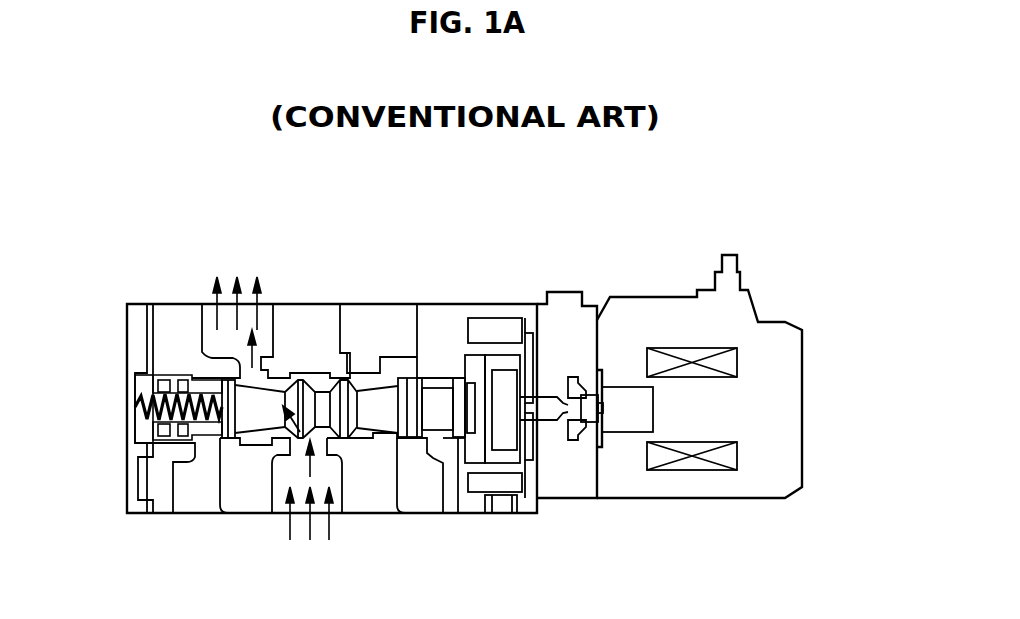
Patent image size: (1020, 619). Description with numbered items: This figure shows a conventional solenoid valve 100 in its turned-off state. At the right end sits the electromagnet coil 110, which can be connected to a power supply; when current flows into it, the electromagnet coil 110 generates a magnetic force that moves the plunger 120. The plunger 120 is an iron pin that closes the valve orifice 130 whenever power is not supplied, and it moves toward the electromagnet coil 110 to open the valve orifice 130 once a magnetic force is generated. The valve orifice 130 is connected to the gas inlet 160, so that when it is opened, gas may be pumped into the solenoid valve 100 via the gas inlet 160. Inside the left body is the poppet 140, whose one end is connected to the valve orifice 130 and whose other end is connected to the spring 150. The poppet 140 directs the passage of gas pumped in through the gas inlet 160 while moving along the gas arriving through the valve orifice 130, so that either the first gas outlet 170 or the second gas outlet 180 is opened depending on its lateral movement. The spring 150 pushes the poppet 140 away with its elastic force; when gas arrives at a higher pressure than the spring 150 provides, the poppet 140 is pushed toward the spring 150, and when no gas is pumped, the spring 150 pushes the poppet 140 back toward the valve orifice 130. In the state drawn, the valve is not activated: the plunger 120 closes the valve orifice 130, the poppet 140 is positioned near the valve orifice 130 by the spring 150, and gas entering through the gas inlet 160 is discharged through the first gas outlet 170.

The solenoid valve 100 is at (560, 256).
The electromagnet coil 110 is at (737, 362).
The plunger 120 is at (593, 440).
The valve orifice 130 is at (573, 420).
The poppet 140 is at (435, 418).
The spring 150 is at (135, 394).
The gas inlet 160 is at (282, 500).
The first gas outlet 170 is at (267, 317).
The second gas outlet 180 is at (377, 320).